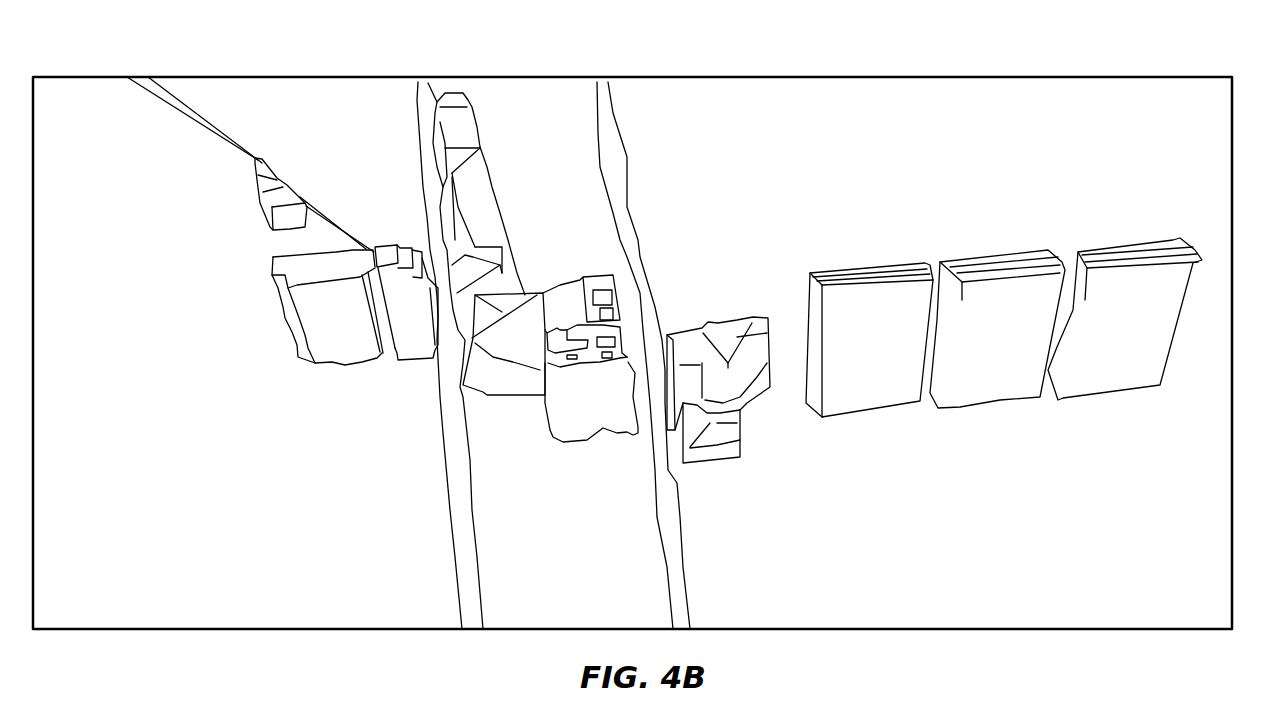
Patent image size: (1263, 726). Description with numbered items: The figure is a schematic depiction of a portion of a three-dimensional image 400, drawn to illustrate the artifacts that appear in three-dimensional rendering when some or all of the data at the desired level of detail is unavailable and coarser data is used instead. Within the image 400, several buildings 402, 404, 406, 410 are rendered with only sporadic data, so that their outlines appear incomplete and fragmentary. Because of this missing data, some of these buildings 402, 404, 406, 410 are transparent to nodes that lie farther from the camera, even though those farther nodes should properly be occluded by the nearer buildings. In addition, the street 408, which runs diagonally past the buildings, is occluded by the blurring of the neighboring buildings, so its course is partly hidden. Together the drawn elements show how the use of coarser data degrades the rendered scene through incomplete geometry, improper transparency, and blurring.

The 3D image 400 is at (693, 36).
The building 402 is at (487, 162).
The building 404 is at (330, 250).
The building 406 is at (287, 200).
The street 408 is at (217, 134).
The building 410 is at (468, 137).